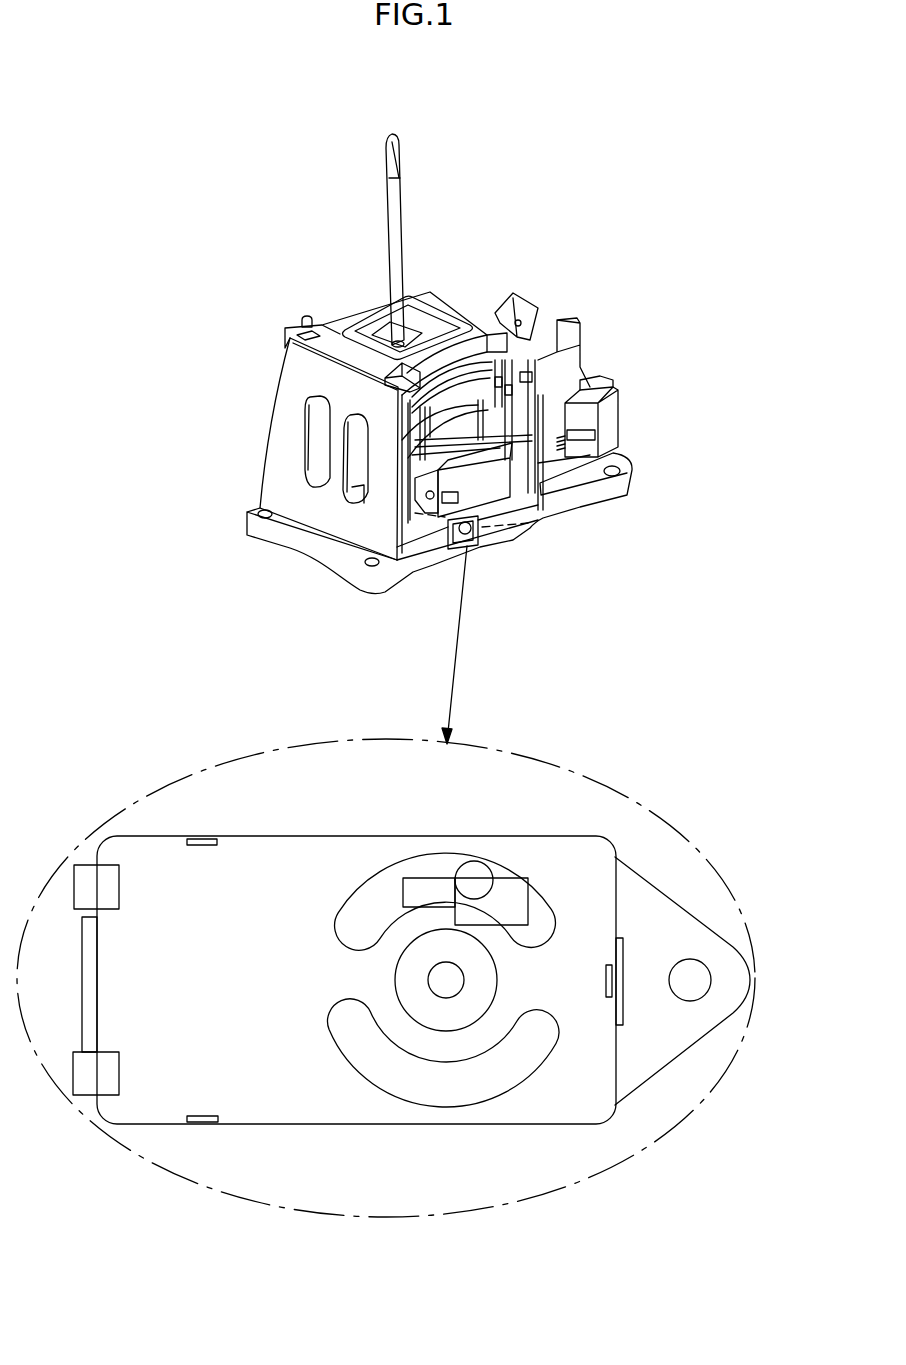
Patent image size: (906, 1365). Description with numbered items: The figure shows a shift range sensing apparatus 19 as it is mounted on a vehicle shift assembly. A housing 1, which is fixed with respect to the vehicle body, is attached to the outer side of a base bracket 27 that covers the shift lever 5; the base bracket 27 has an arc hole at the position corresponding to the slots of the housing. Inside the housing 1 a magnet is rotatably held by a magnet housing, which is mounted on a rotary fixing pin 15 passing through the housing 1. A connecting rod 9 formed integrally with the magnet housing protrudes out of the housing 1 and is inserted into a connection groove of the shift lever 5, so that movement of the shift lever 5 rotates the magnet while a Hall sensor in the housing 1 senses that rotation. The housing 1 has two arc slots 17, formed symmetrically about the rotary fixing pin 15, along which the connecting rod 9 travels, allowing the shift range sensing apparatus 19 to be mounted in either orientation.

The housing 1 is at (264, 877).
The shift lever 5 is at (393, 202).
The connecting rod 9 is at (474, 880).
The rotary fixing pin 15 is at (452, 980).
The arc slots 17 is at (543, 923).
The shift range sensing apparatus 19 is at (487, 490).
The base bracket 27 is at (283, 437).